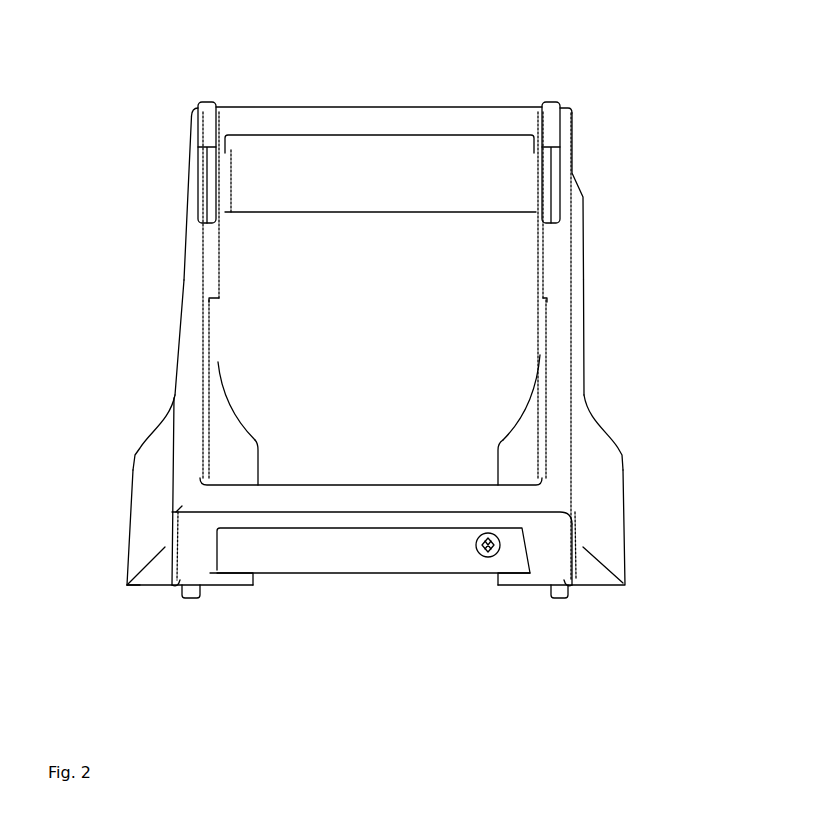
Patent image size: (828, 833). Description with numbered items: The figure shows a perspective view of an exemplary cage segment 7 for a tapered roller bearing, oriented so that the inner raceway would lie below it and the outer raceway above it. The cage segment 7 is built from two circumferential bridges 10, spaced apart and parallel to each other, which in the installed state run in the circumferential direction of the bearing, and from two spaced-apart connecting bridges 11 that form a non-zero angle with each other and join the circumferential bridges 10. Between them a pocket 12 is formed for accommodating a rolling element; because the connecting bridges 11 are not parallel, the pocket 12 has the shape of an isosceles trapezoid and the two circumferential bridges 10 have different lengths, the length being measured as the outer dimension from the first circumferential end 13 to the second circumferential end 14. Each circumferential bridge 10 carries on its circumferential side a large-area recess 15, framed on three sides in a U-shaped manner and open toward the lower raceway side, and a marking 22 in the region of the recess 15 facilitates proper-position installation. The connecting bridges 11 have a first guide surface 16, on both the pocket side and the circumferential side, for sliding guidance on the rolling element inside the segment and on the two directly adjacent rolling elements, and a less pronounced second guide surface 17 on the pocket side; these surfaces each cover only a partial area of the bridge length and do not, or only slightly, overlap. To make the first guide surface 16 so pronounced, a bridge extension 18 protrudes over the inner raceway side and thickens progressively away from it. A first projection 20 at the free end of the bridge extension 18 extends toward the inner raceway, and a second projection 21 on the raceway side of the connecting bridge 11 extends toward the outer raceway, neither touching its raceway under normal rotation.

The cage segment 7 is at (110, 592).
The circumferential bridge 10 is at (347, 96).
The connecting bridge 11 is at (172, 268).
The pocket 12 is at (385, 341).
The first circumferential end 13 is at (178, 333).
The second circumferential end 14 is at (578, 330).
The recess 15 is at (290, 553).
The first guide surface 16 is at (157, 442).
The second guide surface 17 is at (225, 299).
The bridge extension 18 is at (150, 587).
The first projection 20 is at (192, 597).
The second projection 21 is at (198, 112).
The marking 22 is at (483, 558).